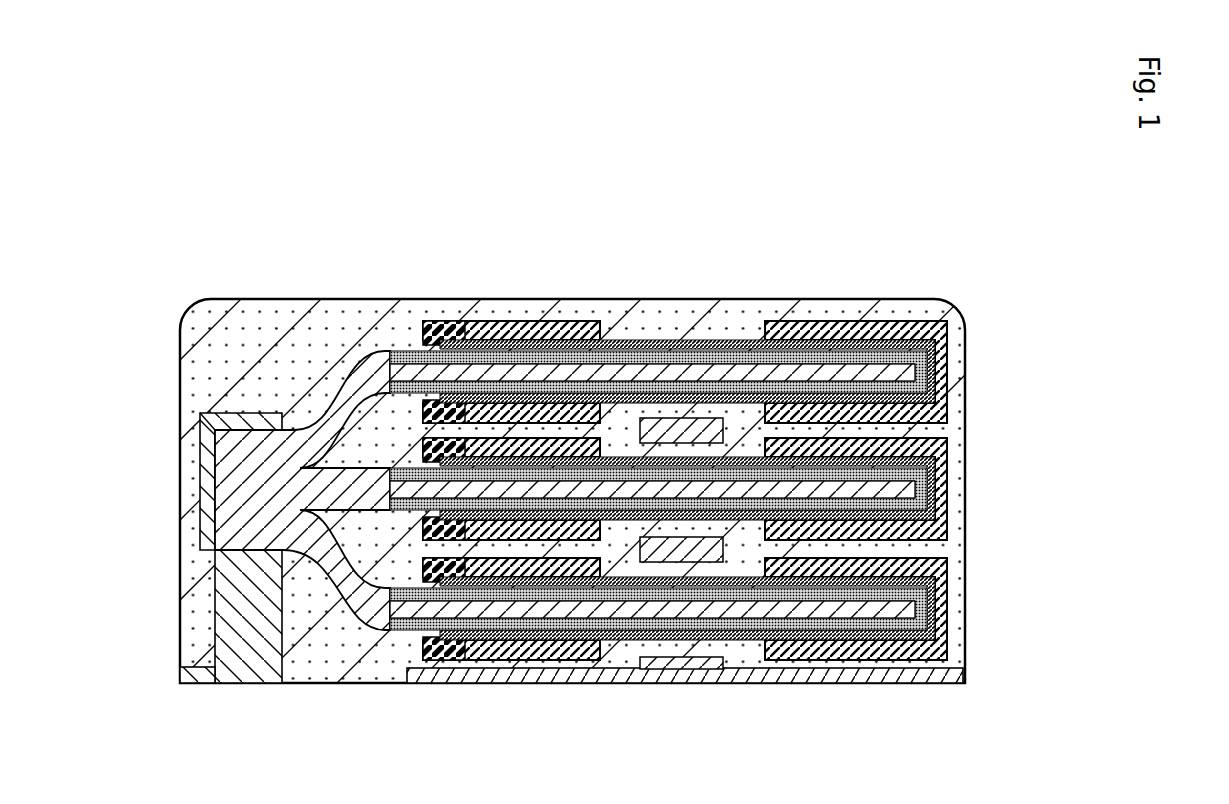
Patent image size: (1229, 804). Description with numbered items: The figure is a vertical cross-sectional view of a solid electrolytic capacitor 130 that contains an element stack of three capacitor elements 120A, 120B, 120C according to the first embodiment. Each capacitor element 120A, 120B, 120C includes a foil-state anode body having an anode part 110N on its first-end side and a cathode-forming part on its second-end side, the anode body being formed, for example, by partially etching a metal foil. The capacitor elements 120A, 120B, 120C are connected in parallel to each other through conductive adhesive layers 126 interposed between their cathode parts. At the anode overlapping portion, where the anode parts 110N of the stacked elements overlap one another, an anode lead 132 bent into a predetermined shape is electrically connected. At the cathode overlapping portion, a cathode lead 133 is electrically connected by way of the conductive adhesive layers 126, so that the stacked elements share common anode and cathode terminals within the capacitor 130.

The anode part 110N is at (295, 447).
The solid electrolytic capacitor 130 is at (565, 283).
The conductive adhesive layer 126 is at (722, 437).
The capacitor element 120A is at (950, 390).
The capacitor element 120B is at (950, 492).
The capacitor element 120C is at (950, 600).
The anode lead 132 is at (246, 662).
The cathode lead 133 is at (515, 672).